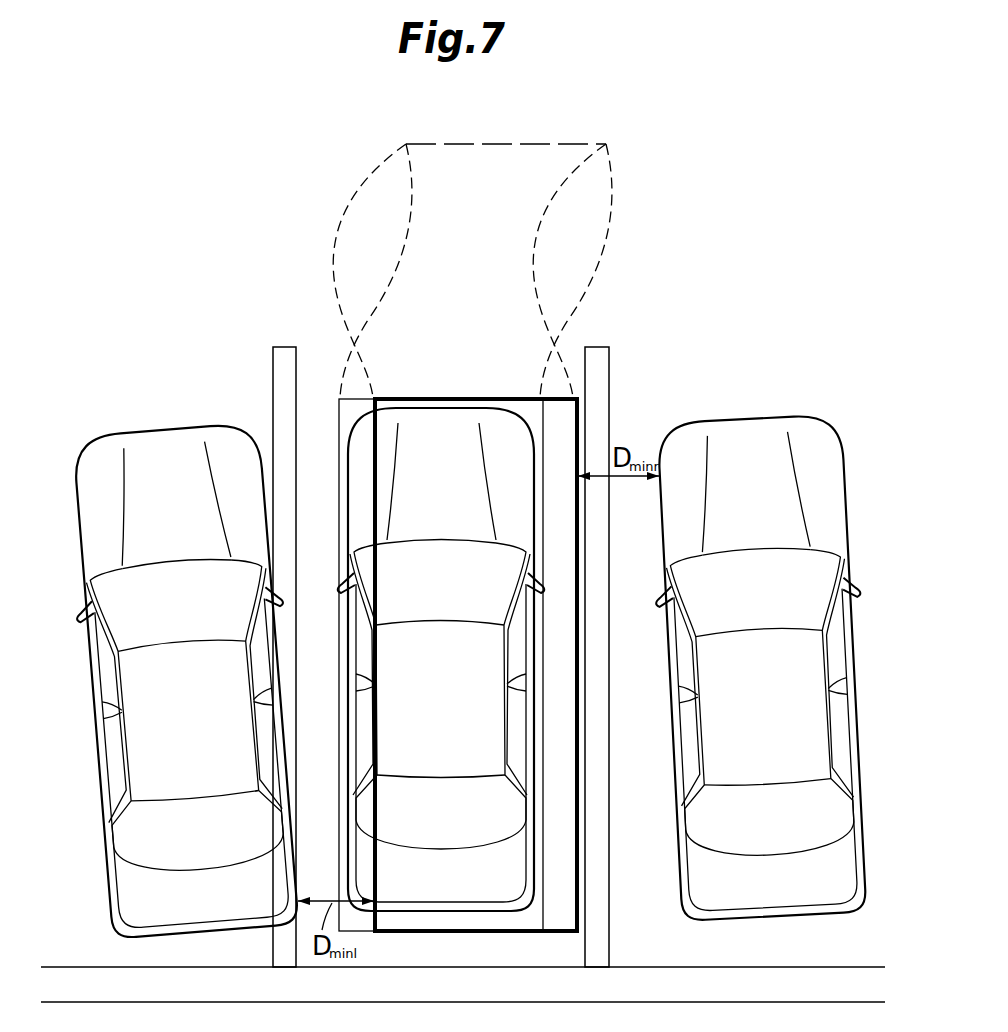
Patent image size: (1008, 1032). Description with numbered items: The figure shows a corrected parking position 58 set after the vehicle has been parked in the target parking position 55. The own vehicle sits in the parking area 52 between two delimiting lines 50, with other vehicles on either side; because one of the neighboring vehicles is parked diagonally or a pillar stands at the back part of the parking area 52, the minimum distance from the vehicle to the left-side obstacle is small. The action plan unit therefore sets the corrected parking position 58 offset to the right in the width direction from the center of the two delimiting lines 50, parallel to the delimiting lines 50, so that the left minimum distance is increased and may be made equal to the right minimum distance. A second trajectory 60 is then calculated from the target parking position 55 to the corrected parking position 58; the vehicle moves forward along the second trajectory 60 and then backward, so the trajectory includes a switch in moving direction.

The delimiting lines 50 is at (598, 358).
The parking area 52 is at (328, 368).
The target parking position 55 is at (340, 423).
The corrected parking position 58 is at (578, 427).
The second trajectory 60 is at (590, 277).